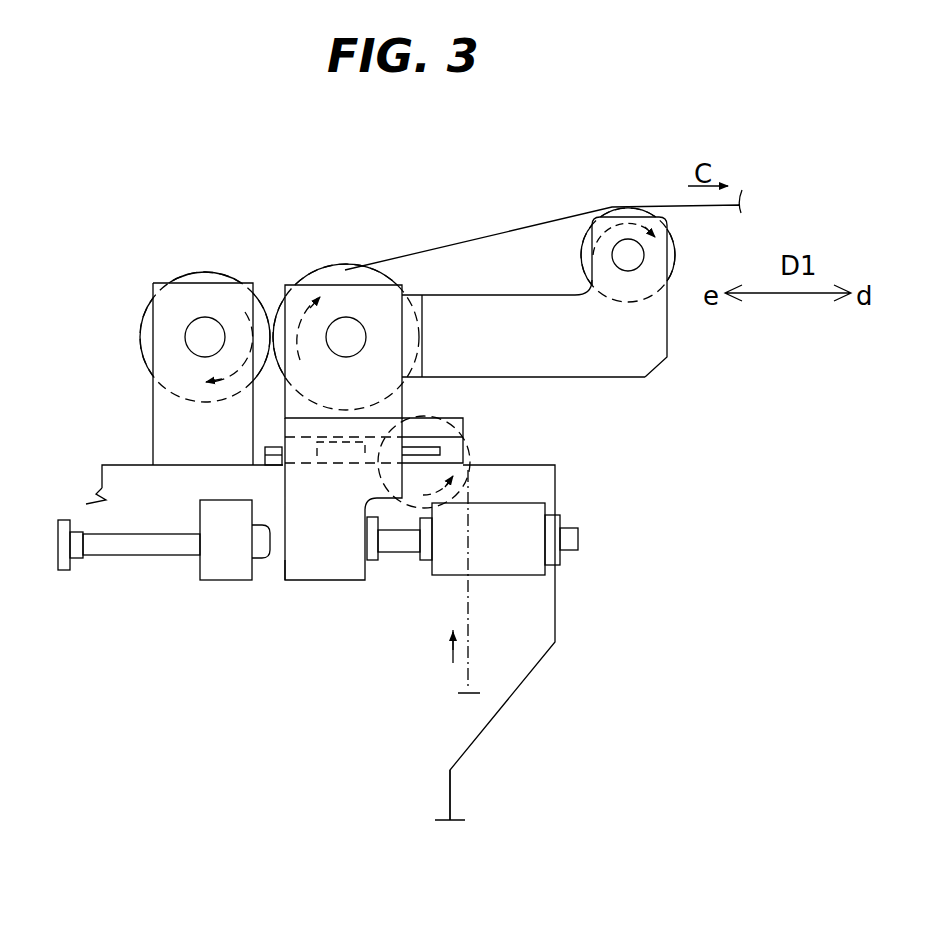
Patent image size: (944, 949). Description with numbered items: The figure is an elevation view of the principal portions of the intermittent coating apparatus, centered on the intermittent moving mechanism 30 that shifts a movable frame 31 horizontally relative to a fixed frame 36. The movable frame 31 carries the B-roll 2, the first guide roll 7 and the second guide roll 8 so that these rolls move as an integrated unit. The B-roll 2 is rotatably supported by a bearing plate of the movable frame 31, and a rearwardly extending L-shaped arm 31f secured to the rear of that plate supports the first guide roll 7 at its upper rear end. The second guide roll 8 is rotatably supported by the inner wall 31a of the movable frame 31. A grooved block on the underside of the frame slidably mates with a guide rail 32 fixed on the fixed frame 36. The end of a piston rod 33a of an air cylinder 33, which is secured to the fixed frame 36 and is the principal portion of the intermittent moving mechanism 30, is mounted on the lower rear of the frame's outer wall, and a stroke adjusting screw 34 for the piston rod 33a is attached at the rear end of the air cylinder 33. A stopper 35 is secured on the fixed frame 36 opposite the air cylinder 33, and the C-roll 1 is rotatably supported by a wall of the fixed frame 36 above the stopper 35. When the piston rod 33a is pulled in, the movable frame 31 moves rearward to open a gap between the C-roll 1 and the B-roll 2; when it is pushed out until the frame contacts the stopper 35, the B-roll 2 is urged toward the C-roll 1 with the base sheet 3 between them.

The C-roll 1 is at (205, 276).
The B-roll 2 is at (334, 274).
The base sheet 3 is at (527, 222).
The first guide roll 7 is at (670, 248).
The second guide roll 8 is at (418, 424).
The intermittent moving mechanism 30 is at (100, 240).
The movable frame 31 is at (333, 583).
The inner wall 31a is at (303, 556).
The L-shaped arm 31f is at (640, 343).
The guide rail 32 is at (450, 450).
The air cylinder 33 is at (507, 588).
The piston rod 33a is at (403, 540).
The stroke adjusting screw 34 is at (535, 535).
The stopper 35 is at (230, 556).
The fixed frame 36 is at (425, 796).